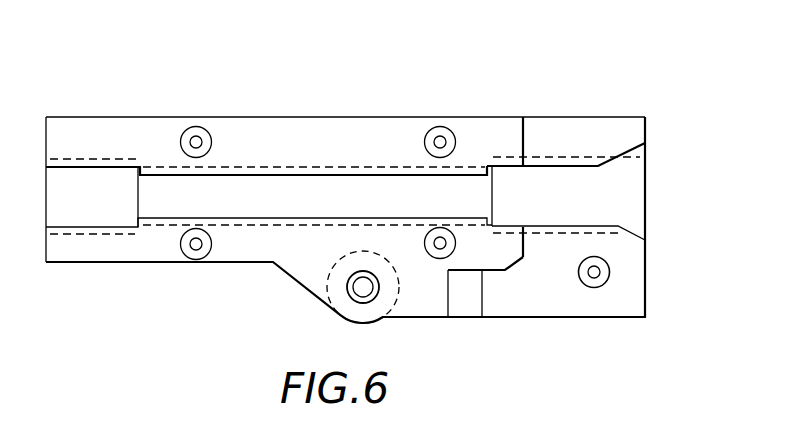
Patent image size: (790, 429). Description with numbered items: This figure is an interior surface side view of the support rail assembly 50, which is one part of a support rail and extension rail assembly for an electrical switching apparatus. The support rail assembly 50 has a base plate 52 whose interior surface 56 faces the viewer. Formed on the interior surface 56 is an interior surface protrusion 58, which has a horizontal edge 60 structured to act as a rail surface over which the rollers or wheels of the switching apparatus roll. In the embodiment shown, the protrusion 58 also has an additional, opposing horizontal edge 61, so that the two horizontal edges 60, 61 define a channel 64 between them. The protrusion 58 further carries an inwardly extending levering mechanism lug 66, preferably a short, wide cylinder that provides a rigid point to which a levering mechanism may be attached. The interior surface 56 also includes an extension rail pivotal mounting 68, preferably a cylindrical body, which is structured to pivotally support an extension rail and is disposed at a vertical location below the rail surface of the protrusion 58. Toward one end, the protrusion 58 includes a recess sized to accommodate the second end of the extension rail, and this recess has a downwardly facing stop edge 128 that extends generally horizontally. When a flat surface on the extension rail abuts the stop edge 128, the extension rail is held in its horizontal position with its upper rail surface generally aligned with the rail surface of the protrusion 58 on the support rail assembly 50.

The support rail assembly 50 is at (80, 98).
The base plate 52 is at (625, 194).
The interior surface 56 is at (247, 205).
The interior surface protrusion 58 is at (231, 128).
The horizontal edge 60 is at (272, 175).
The opposing horizontal edge 61 is at (173, 217).
The channel 64 is at (372, 197).
The levering mechanism lug 66 is at (360, 289).
The extension rail pivotal mounting 68 is at (595, 289).
The stop edge 128 is at (482, 271).